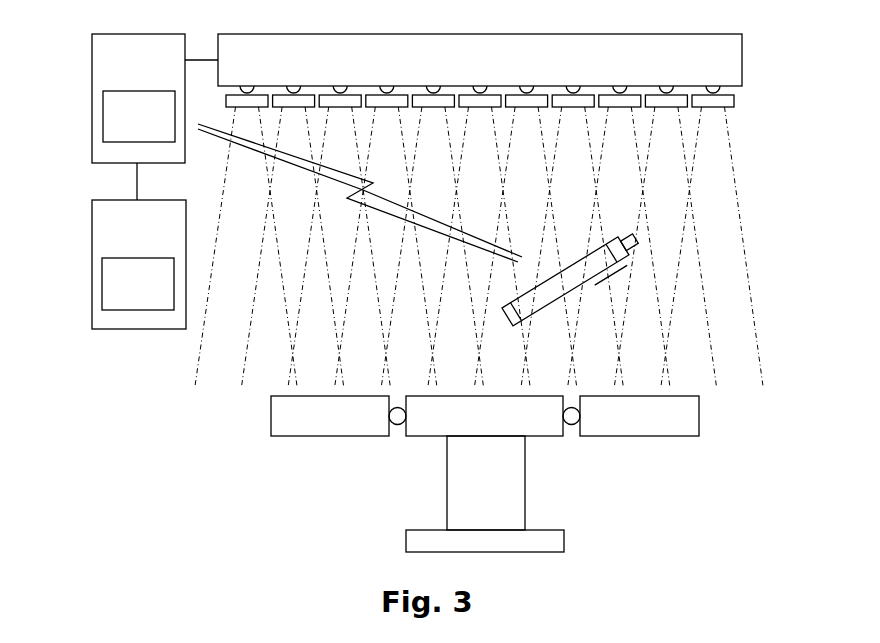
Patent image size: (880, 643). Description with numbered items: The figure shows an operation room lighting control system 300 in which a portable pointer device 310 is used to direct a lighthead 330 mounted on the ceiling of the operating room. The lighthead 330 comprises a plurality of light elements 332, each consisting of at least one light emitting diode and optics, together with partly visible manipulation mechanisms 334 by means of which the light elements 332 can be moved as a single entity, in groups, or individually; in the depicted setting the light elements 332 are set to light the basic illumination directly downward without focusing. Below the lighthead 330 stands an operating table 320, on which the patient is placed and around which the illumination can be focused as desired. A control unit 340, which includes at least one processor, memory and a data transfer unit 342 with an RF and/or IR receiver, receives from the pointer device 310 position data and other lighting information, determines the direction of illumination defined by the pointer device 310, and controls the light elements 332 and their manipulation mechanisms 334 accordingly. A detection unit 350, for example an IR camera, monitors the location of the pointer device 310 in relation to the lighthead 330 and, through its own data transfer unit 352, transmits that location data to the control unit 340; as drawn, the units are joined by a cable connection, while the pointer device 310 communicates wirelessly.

The operation room lighting control system 300 is at (104, 400).
The portable pointer device 310 is at (628, 238).
The operating table 320 is at (270, 415).
The lighthead 330 is at (742, 67).
The light elements 332 is at (708, 107).
The manipulation mechanisms 334 is at (622, 100).
The control unit 340 is at (92, 66).
The data transfer unit 342 is at (103, 132).
The detection unit 350 is at (92, 228).
The data transfer unit 352 is at (102, 283).